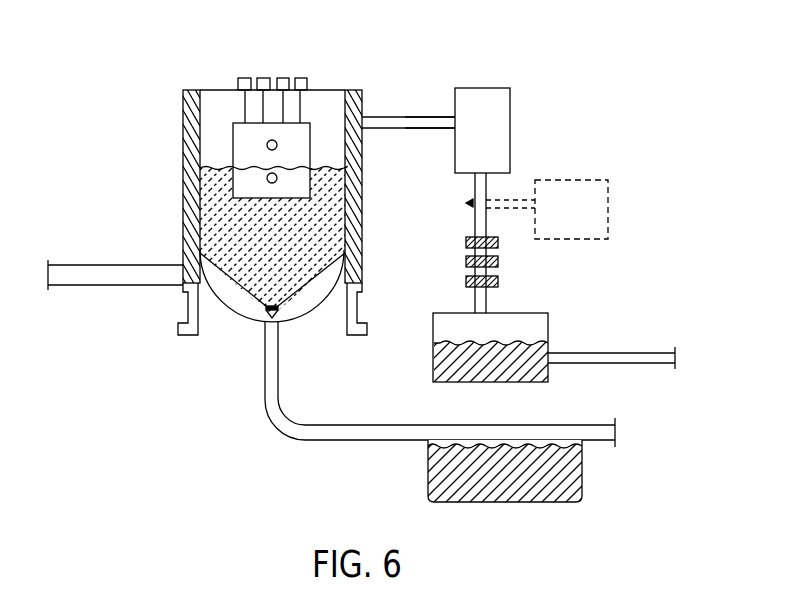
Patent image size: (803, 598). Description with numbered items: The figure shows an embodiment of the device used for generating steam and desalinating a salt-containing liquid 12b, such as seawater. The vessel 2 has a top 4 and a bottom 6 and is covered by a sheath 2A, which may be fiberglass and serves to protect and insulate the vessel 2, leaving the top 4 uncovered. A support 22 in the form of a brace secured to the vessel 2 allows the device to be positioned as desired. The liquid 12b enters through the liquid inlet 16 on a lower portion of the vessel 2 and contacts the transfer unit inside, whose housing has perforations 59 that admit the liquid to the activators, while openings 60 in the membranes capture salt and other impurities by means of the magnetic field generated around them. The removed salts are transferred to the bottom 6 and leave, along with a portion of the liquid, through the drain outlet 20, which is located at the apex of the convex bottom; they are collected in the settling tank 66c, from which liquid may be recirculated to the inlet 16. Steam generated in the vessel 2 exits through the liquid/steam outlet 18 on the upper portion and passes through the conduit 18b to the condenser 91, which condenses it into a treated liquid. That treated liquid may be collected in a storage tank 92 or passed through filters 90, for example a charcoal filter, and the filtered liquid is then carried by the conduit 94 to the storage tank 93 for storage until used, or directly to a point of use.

The top 4 is at (249, 158).
The vessel 2 is at (204, 139).
The sheath 2A is at (171, 176).
The liquid containing a salt 12b is at (219, 216).
The openings 60 is at (248, 144).
The openings or perforations 59 is at (256, 177).
The bottom 6 is at (226, 315).
The drain outlet 20 is at (255, 332).
The liquid inlet 16 is at (92, 257).
The support 22 is at (166, 326).
The liquid/steam outlet 18 is at (369, 104).
The conduit 18b is at (399, 107).
The condenser 91 is at (521, 127).
The conduit 94 is at (498, 298).
The storage tank 92 is at (626, 211).
The filters 90 is at (461, 243).
The storage tank 93 is at (565, 333).
The settling tank 66c is at (417, 476).